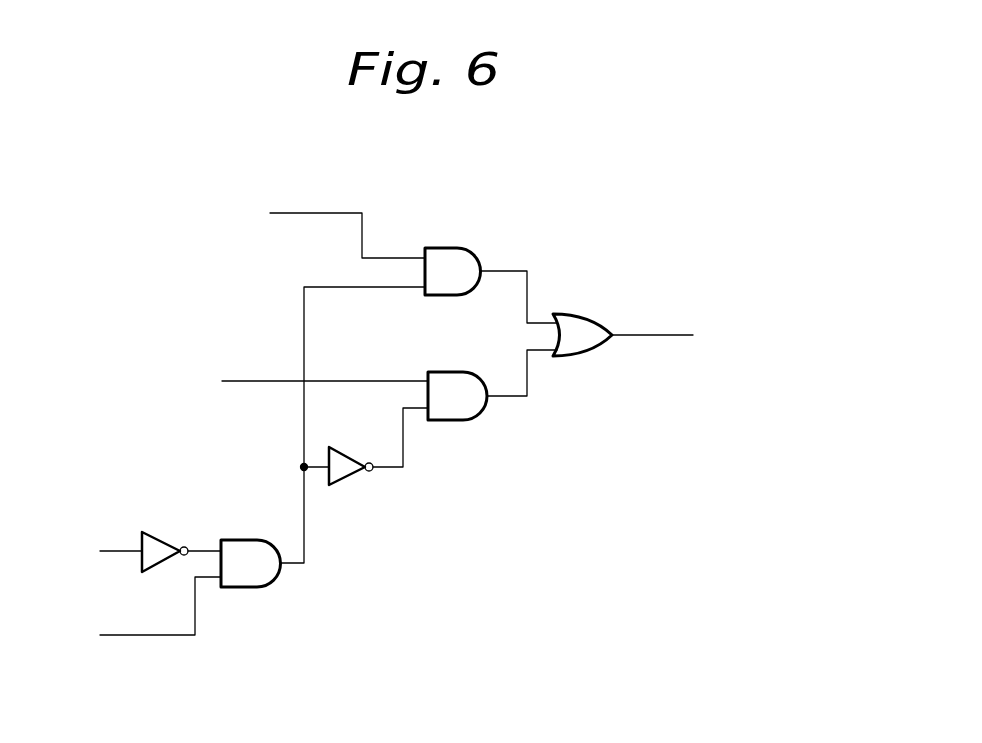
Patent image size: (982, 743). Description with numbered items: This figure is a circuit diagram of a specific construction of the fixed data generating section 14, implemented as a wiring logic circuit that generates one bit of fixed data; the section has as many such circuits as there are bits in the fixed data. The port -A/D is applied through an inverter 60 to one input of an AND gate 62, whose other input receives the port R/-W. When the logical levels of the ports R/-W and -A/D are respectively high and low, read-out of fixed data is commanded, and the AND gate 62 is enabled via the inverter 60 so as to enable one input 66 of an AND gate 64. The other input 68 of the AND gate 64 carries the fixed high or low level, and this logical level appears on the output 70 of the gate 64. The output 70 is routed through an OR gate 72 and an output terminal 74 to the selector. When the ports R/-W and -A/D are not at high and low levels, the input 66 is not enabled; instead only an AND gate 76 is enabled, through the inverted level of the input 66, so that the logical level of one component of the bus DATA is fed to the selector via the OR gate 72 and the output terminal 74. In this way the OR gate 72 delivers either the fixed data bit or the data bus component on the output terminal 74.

The fixed data generating section 14 is at (534, 536).
The inverter 60 is at (162, 533).
The AND gate 62 is at (250, 590).
The AND gate 64 is at (453, 246).
The one input of the AND gate 66 is at (303, 333).
The other input of the AND gate 68 is at (331, 212).
The output of the gate 70 is at (518, 270).
The OR gate 72 is at (573, 358).
The output terminal 74 is at (650, 335).
The AND gate 76 is at (462, 423).